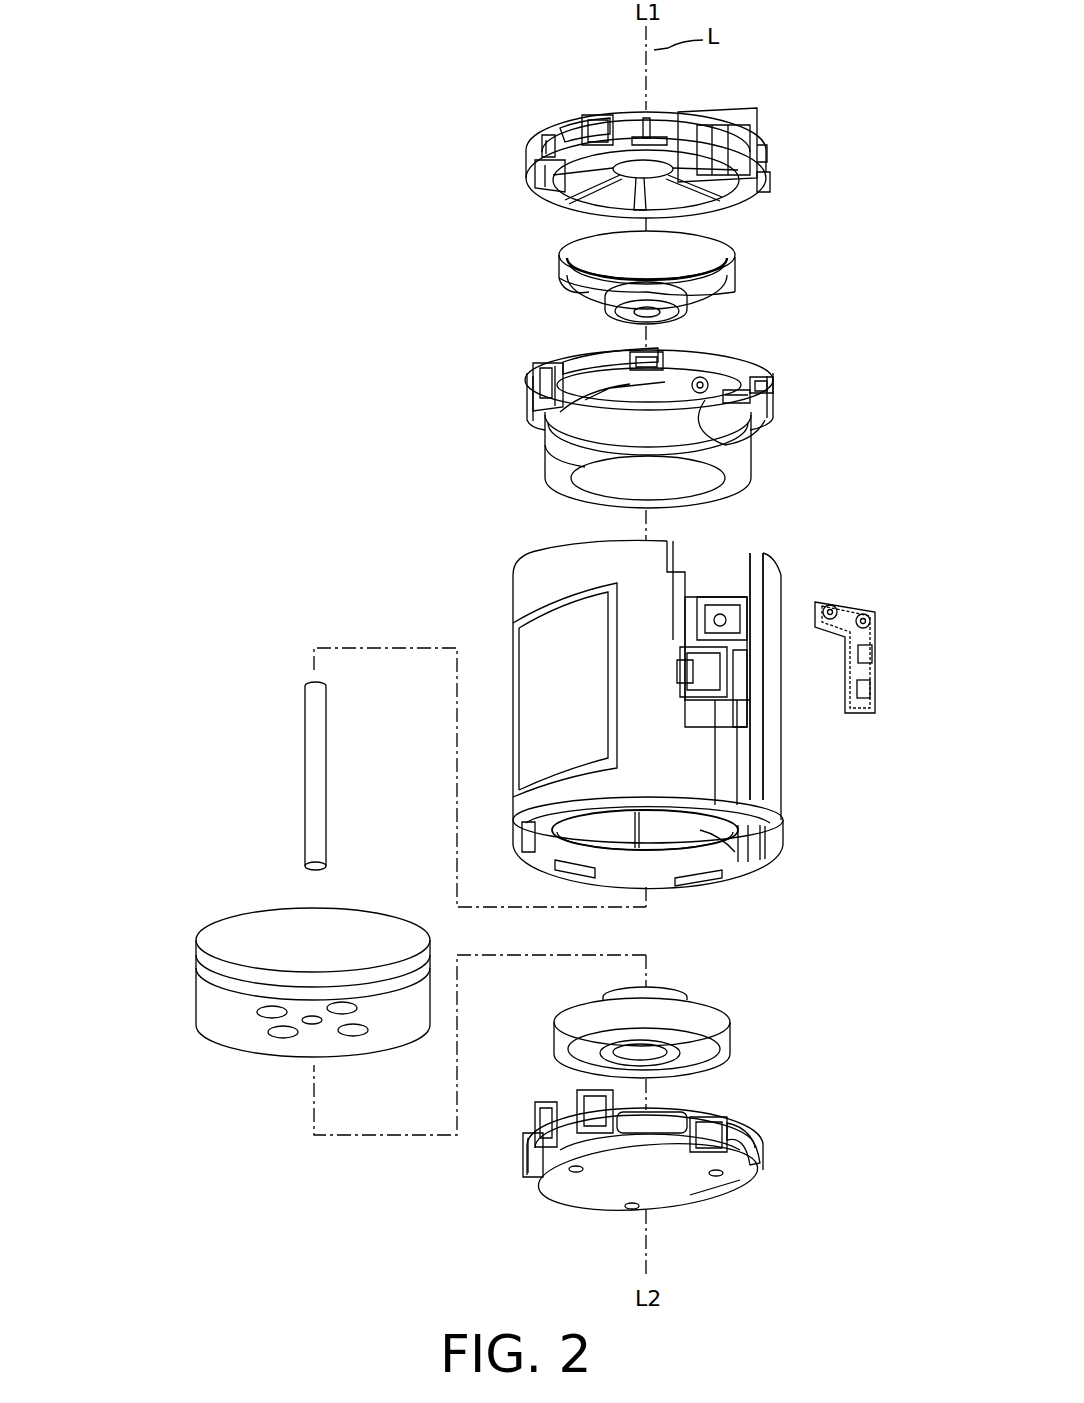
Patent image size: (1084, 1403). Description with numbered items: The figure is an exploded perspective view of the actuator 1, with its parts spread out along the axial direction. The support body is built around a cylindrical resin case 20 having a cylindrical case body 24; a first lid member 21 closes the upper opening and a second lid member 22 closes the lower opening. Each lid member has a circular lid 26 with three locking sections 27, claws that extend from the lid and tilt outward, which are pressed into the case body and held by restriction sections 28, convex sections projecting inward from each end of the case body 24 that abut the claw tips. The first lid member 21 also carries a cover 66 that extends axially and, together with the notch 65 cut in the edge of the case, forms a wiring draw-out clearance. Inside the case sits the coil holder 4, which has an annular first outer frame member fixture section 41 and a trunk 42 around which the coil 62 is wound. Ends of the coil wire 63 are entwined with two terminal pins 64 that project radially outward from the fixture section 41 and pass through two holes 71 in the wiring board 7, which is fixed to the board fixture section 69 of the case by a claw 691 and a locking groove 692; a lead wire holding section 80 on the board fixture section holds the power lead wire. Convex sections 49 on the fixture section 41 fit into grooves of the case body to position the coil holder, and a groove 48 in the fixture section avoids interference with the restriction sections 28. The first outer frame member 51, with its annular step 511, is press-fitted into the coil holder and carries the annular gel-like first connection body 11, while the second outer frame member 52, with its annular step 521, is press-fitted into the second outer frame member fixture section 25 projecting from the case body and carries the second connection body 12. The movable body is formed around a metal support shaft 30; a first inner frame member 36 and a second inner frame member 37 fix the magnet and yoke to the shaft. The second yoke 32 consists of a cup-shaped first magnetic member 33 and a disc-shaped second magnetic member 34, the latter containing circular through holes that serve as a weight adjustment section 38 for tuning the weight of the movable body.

The actuator 1 is at (276, 108).
The first lid member 21 is at (678, 656).
The lid 26 is at (580, 118).
The locking section 27 is at (600, 122).
The cover 66 is at (768, 152).
The first connection body 11 is at (700, 270).
The first outer frame member 51 is at (682, 275).
The annular step 511 is at (738, 290).
The first inner frame member 36 is at (605, 300).
The coil holder 4 is at (693, 415).
The first outer frame member fixture section 41 is at (540, 435).
The trunk 42 is at (735, 485).
The coil 62 is at (553, 450).
The convex section 49 is at (545, 385).
The groove 48 is at (600, 380).
The terminal pin 64 is at (740, 395).
The coil wire 63 is at (735, 430).
The case 20 is at (703, 711).
The case body 24 is at (770, 782).
The notch 65 is at (748, 578).
The claw 691 is at (716, 612).
The locking groove 692 is at (745, 708).
The board fixture section 69 is at (746, 657).
The lead wire holding section 80 is at (705, 702).
The restriction section 28 is at (528, 858).
The second outer frame member fixture section 25 is at (708, 828).
The wiring board 7 is at (867, 628).
The hole 71 is at (863, 613).
The support shaft 30 is at (302, 752).
The second yoke 32 is at (248, 1004).
The first magnetic member 33 is at (205, 962).
The second magnetic member 34 is at (230, 1012).
The weight adjustment section 38 is at (283, 1038).
The second connection body 12 is at (706, 1050).
The second outer frame member 52 is at (722, 1004).
The annular step 521 is at (690, 1000).
The second inner frame member 37 is at (660, 996).
The second lid member 22 is at (786, 1162).